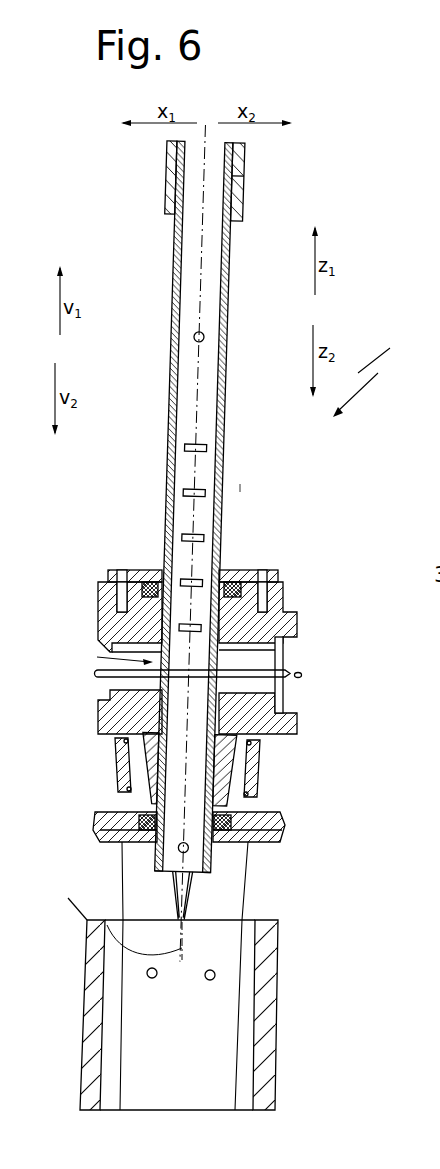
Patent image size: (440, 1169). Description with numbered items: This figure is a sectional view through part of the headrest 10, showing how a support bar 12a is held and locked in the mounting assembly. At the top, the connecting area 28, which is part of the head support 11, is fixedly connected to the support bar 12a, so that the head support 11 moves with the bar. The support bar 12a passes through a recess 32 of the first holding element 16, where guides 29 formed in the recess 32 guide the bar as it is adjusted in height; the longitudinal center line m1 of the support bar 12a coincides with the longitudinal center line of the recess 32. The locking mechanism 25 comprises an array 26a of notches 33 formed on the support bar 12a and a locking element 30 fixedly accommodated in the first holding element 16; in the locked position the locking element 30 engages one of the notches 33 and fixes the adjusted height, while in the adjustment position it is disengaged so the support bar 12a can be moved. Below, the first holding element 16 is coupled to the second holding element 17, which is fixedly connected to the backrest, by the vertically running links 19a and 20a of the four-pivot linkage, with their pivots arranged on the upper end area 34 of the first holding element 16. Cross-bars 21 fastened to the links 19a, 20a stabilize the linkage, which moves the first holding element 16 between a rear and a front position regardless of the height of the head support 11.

The headrest 10 is at (379, 374).
The head support 11 is at (237, 193).
The support bar 12a is at (172, 410).
The first holding element 16 is at (298, 712).
The second holding element 17 is at (280, 976).
The link 19a is at (138, 883).
The link 20a is at (232, 885).
The cross-bar 21 is at (113, 760).
The locking mechanism 25 is at (97, 657).
The array of notches 26a is at (246, 488).
The connecting area 28 is at (170, 185).
The guide 29 is at (155, 570).
The locking element 30 is at (293, 650).
The recess 32 is at (228, 560).
The notch 33 is at (205, 484).
The upper end area 34 is at (289, 573).
The longitudinal center line m1 is at (69, 898).